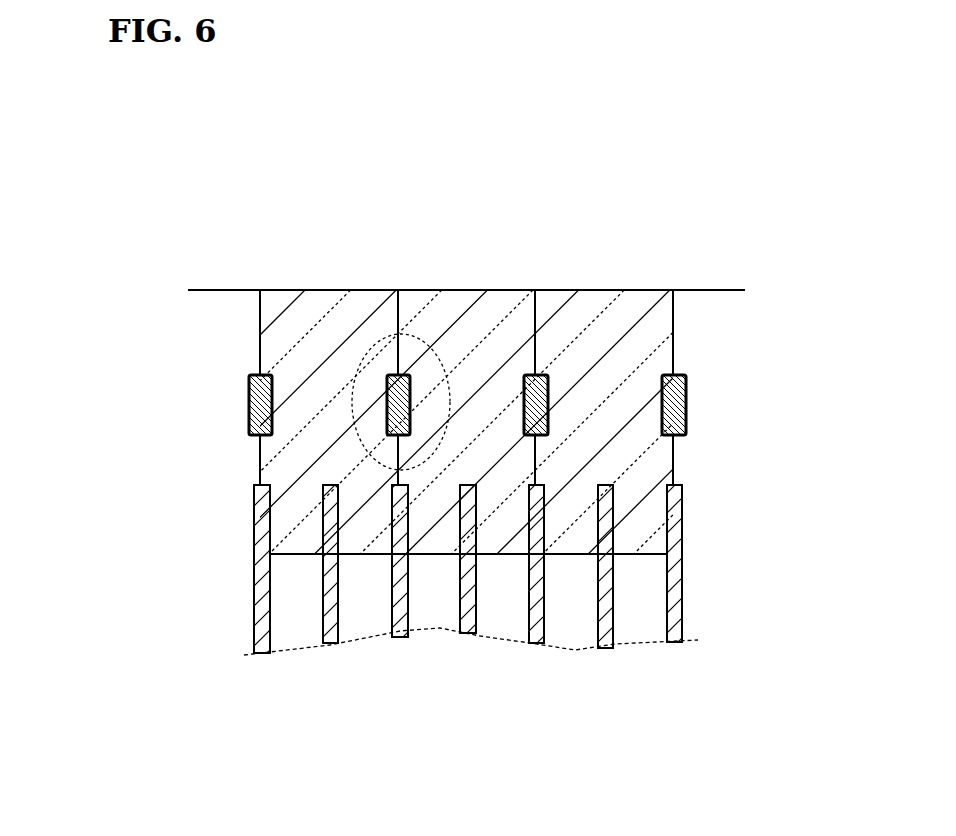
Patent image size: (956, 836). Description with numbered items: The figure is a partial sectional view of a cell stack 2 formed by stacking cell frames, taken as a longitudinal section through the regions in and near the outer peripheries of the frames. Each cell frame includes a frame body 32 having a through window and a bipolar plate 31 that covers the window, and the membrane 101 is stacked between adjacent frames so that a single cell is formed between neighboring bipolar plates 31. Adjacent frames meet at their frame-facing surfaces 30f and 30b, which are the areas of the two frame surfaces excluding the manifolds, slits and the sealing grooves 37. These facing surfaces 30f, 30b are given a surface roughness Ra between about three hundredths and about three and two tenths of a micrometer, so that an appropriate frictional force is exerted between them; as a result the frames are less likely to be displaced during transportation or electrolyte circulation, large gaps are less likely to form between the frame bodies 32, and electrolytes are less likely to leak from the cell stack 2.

The cell stack 2 is at (186, 265).
The frame-facing surface 30b is at (252, 326).
The frame-facing surface 30f is at (408, 312).
The bipolar plate 31 is at (330, 645).
The frame body 32 is at (333, 305).
The sealing groove 37 is at (388, 410).
The membrane 101 is at (262, 655).